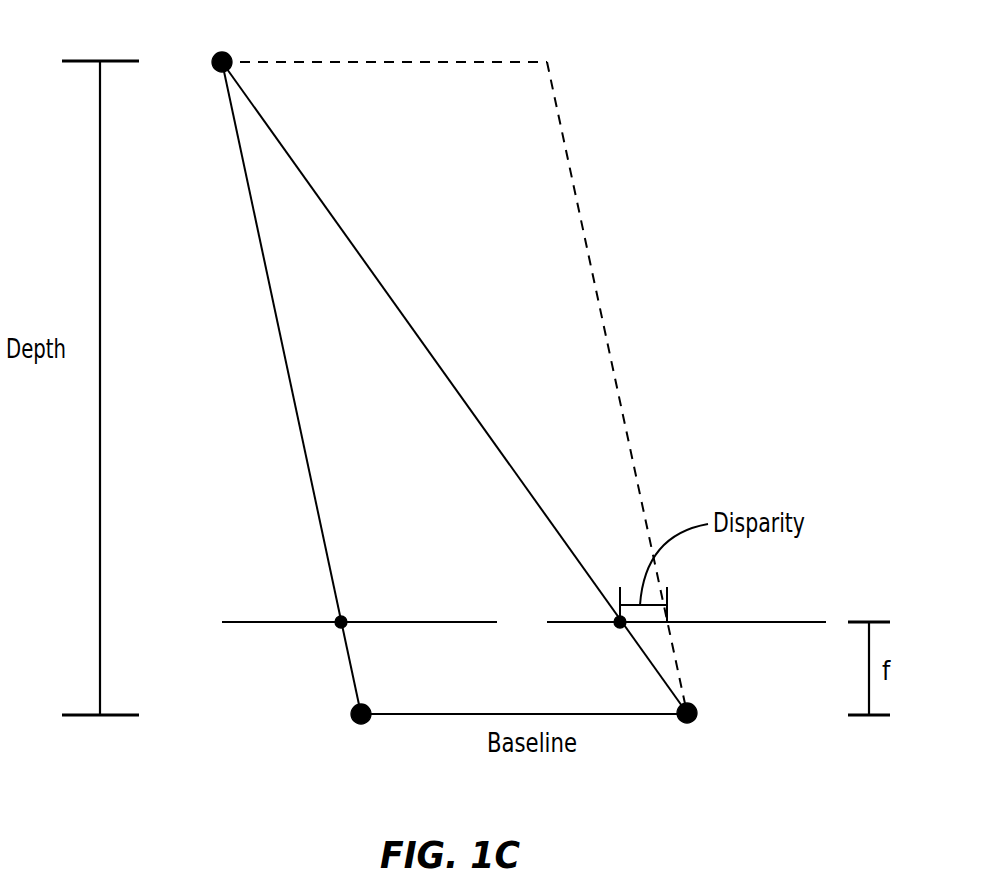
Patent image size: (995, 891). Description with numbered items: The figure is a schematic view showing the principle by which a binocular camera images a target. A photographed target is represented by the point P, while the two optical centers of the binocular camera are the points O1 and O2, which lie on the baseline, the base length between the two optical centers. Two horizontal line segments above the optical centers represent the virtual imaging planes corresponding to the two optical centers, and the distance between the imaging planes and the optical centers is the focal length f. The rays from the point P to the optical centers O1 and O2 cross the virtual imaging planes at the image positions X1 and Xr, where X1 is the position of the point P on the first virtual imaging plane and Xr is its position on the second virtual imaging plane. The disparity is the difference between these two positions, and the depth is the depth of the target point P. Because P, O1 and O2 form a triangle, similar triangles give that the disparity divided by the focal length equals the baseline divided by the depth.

The target point P is at (210, 55).
The position of the point P on the first virtual imaging plane X1 is at (327, 642).
The position of the point P on the second virtual imaging plane Xr is at (609, 642).
The optical center O1 is at (346, 732).
The optical center O2 is at (705, 732).